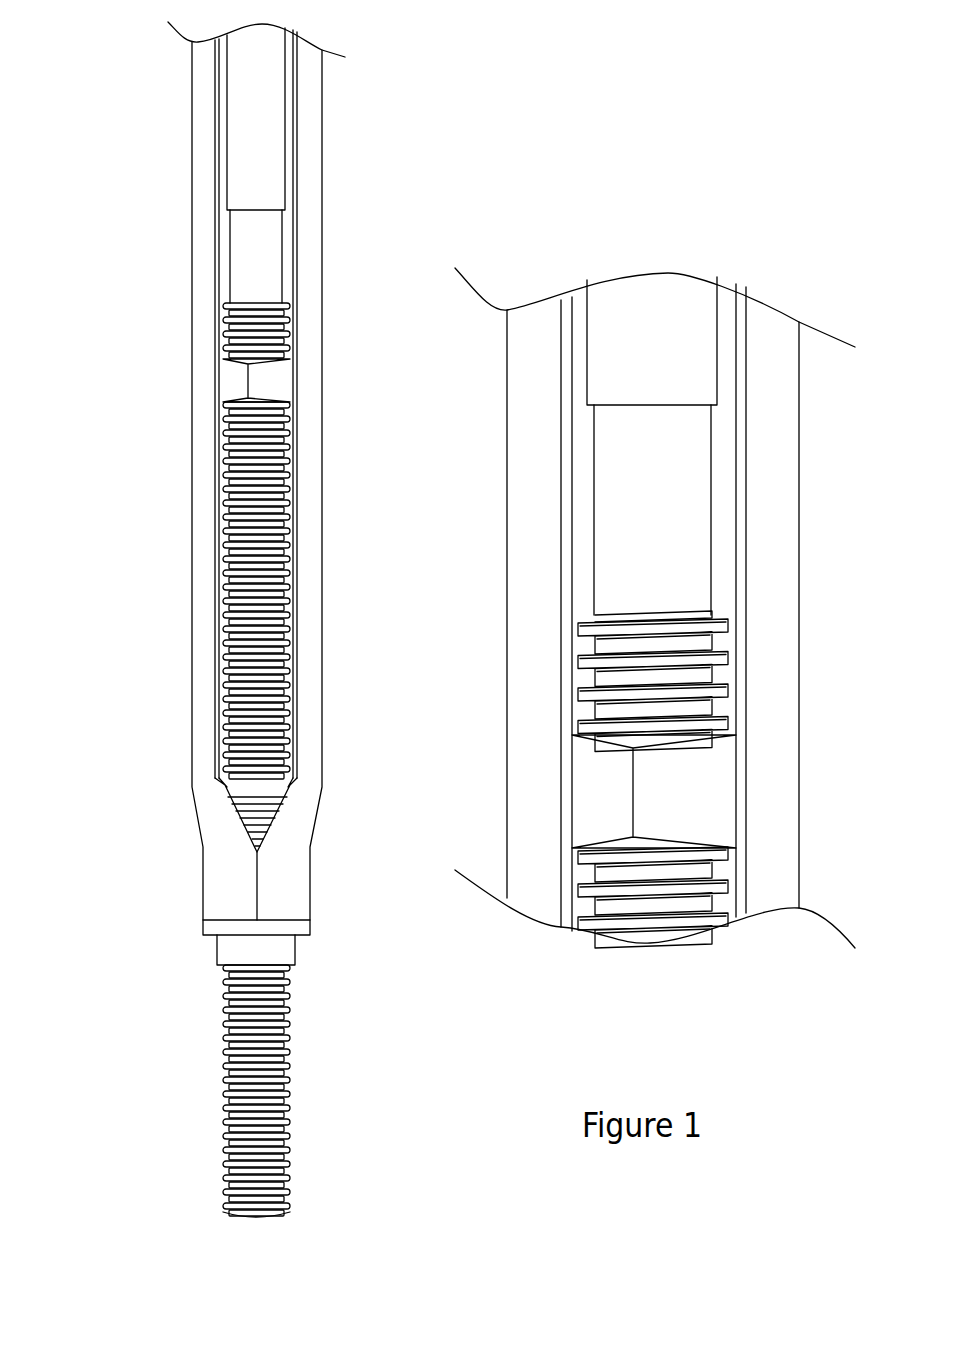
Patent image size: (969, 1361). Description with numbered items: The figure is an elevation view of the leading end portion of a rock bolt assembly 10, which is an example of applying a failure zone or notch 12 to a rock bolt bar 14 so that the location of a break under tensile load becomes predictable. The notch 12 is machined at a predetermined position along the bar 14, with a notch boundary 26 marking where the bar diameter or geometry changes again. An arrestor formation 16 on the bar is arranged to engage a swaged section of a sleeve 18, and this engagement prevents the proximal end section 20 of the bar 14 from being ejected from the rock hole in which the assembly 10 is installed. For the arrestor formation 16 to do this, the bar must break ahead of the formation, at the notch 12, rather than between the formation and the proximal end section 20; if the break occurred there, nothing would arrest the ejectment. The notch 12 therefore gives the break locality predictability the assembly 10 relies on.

The rock bolt assembly 10 is at (157, 387).
The notch 12 is at (253, 258).
The rock bolt bar 14 is at (258, 143).
The arrestor formation 16 is at (270, 378).
The sleeve 18 is at (293, 877).
The proximal end section 20 is at (327, 1228).
The notch boundary 26 is at (310, 1047).